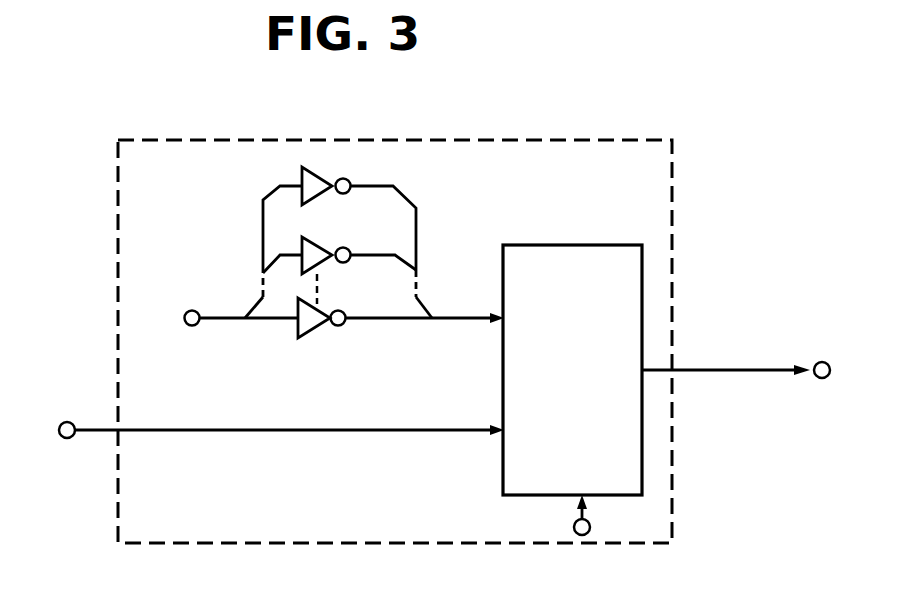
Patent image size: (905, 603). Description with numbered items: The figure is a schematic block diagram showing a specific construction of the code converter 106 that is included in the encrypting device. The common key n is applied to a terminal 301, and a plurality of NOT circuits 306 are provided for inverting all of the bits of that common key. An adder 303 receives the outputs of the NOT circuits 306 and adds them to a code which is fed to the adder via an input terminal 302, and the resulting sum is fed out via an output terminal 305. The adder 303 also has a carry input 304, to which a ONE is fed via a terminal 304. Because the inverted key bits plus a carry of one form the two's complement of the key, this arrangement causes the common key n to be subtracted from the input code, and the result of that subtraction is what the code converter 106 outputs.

The code converter 106 is at (489, 139).
The terminal 301 is at (195, 311).
The input terminal 302 is at (70, 422).
The adder 303 is at (588, 244).
The carry input 304 is at (590, 522).
The output terminal 305 is at (830, 343).
The NOT circuits 306 is at (322, 177).